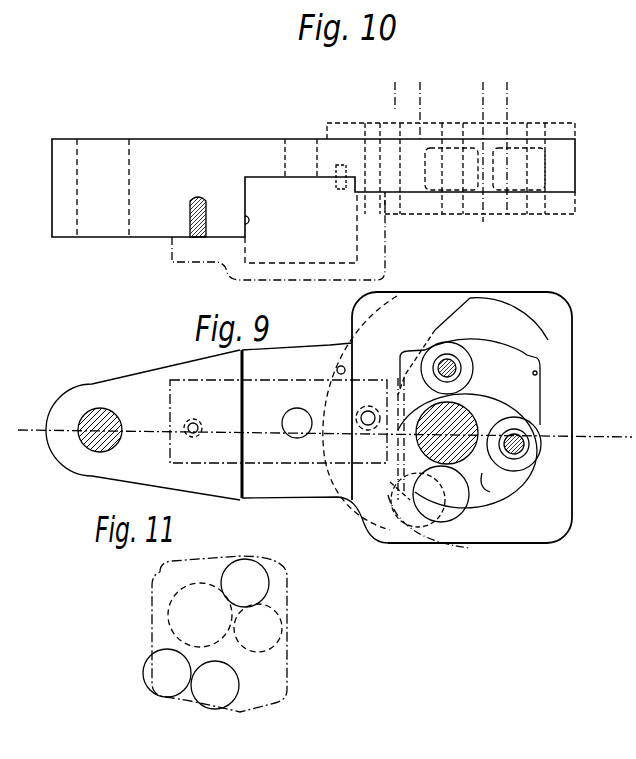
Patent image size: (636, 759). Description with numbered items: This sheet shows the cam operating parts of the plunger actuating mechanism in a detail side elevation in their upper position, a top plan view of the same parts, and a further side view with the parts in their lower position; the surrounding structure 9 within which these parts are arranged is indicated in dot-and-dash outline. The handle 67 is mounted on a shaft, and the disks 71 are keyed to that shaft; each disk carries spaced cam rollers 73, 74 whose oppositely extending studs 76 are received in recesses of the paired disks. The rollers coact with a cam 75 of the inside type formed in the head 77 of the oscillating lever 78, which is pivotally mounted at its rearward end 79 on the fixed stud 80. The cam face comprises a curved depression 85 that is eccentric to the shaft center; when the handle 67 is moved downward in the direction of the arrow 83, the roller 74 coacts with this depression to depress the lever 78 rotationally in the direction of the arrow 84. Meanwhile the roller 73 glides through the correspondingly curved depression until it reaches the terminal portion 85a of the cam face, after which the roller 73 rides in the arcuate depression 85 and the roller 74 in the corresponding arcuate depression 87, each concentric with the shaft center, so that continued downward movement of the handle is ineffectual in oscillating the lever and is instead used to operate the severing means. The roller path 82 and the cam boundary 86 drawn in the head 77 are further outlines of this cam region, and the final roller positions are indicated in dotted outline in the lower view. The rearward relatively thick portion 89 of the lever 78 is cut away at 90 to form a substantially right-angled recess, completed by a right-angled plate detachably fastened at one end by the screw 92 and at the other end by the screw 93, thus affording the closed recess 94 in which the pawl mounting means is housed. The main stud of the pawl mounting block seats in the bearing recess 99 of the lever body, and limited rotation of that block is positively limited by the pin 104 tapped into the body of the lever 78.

In FIG. 10, the housing 9 is at (376, 268).
In FIG. 9, the handle 67 is at (464, 411).
In FIG. 11, the handle 67 is at (200, 615).
In FIG. 10, the disk 71 is at (552, 142).
In FIG. 10, the cam roller 73 is at (545, 170).
In FIG. 9, the cam roller 73 is at (537, 355).
In FIG. 11, the cam roller 73 is at (212, 634).
In FIG. 9, the cam roller 74 is at (528, 470).
In FIG. 9, the cam 75 is at (534, 444).
In FIG. 9, the stud 76 is at (453, 364).
In FIG. 9, the head 77 is at (567, 517).
In FIG. 9, the oscillating lever 78 is at (318, 490).
In FIG. 9, the rearward end 79 is at (104, 386).
In FIG. 9, the fixed stud 80 is at (80, 432).
In FIG. 9, the cam track 82 is at (533, 416).
In FIG. 9, the arrow 83 is at (508, 276).
In FIG. 9, the arrow 84 is at (606, 478).
In FIG. 9, the curved depression 85 is at (497, 351).
In FIG. 9, the terminal portion 85a is at (526, 352).
In FIG. 9, the stop 86 is at (537, 374).
In FIG. 9, the arcuate depression 87 is at (407, 495).
In FIG. 10, the rearward relatively thick portion 89 is at (186, 128).
In FIG. 10, the cut-away 90 is at (237, 215).
In FIG. 10, the screw 92 is at (372, 155).
In FIG. 9, the screw 92 is at (370, 426).
In FIG. 10, the screw 93 is at (184, 217).
In FIG. 10, the closed recess 94 is at (327, 253).
In FIG. 10, the bearing recess 99 is at (301, 170).
In FIG. 9, the bearing recess 99 is at (305, 396).
In FIG. 10, the pin 104 is at (341, 190).